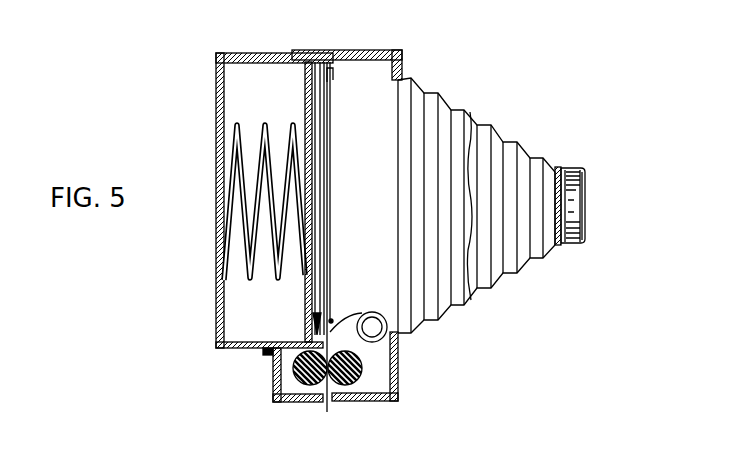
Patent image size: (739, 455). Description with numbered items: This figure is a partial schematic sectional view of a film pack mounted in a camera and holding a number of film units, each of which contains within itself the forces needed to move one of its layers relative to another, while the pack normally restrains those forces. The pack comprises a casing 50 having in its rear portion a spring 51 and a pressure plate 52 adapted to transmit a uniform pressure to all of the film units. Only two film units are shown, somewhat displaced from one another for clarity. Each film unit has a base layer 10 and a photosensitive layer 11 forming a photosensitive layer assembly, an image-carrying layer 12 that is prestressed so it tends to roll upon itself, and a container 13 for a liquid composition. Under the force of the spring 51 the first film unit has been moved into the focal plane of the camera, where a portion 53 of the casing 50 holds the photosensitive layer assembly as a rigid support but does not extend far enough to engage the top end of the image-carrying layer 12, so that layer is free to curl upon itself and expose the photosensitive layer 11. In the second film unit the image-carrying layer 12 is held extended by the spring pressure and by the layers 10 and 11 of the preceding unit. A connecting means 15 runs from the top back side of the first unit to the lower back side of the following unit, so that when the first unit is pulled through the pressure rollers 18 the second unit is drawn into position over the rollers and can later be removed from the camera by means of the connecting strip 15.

The casing 50 is at (240, 53).
The spring 51 is at (240, 136).
The pressure plate 52 is at (306, 82).
The portion of the casing 53 is at (333, 74).
The base layer 10 is at (333, 170).
The photosensitive layer 11 is at (331, 192).
The connecting means 15 is at (323, 232).
The container 13 is at (333, 327).
The image-carrying layer 12 is at (362, 313).
The pressure rollers 18 is at (295, 368).